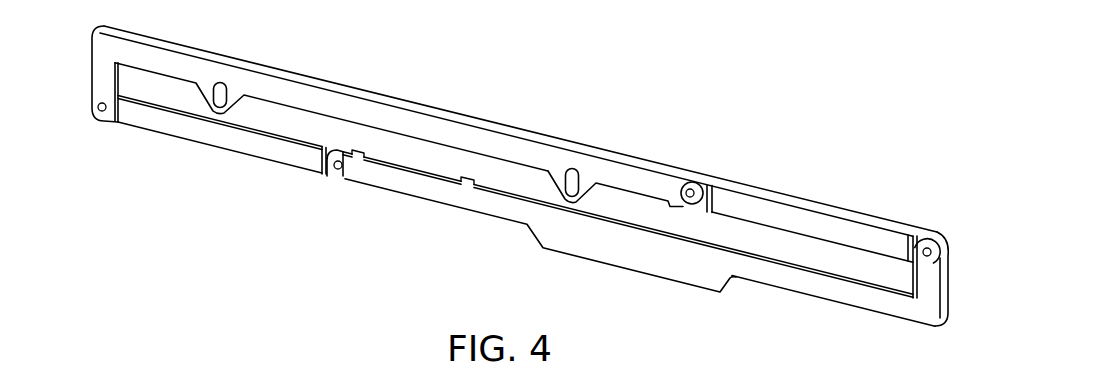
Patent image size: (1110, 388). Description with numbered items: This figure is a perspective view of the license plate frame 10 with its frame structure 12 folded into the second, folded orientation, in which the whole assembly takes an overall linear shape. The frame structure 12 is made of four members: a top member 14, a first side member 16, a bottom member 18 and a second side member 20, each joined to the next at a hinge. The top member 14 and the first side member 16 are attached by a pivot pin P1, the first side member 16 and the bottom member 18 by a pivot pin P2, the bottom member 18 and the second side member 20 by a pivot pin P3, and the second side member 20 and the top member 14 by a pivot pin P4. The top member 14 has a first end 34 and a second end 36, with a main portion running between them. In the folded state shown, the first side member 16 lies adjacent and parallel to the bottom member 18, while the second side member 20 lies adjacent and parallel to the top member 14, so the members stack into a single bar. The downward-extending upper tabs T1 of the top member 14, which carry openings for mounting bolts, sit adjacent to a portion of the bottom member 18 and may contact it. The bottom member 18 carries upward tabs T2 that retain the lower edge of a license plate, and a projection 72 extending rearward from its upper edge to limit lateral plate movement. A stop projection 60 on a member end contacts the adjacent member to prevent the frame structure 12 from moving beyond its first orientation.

The license plate frame 10 is at (713, 62).
The frame structure 12 is at (292, 70).
The top member 14 is at (420, 112).
The first side member 16 is at (793, 217).
The bottom member 18 is at (432, 192).
The second side member 20 is at (254, 147).
The first end 34 is at (678, 188).
The second end 36 is at (100, 78).
The stop projection 60 is at (358, 150).
The projection 72 is at (470, 178).
The pivot pin P1 is at (697, 186).
The pivot pin P2 is at (935, 248).
The pivot pin P3 is at (338, 170).
The pivot pin P4 is at (101, 112).
The upper tabs T1 is at (214, 108).
The tabs T2 is at (578, 196).